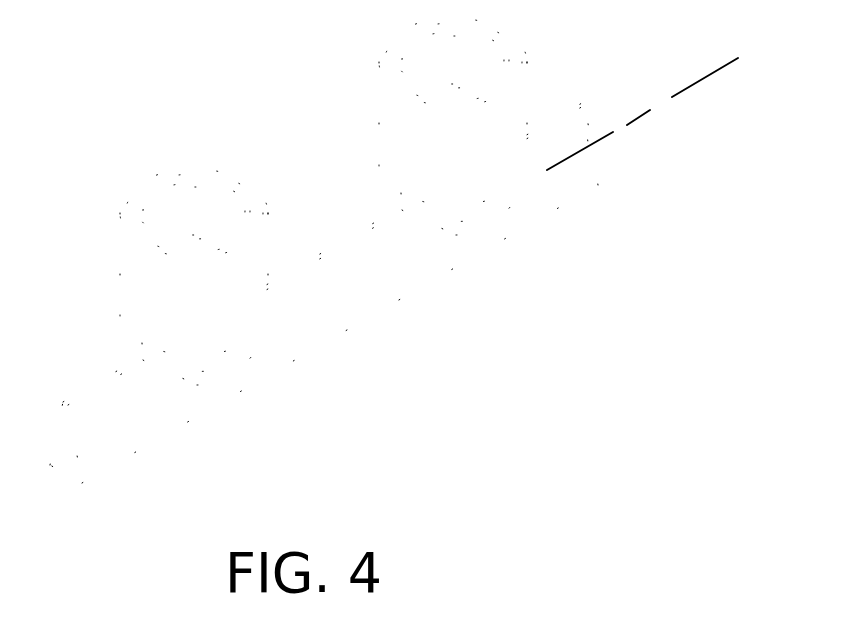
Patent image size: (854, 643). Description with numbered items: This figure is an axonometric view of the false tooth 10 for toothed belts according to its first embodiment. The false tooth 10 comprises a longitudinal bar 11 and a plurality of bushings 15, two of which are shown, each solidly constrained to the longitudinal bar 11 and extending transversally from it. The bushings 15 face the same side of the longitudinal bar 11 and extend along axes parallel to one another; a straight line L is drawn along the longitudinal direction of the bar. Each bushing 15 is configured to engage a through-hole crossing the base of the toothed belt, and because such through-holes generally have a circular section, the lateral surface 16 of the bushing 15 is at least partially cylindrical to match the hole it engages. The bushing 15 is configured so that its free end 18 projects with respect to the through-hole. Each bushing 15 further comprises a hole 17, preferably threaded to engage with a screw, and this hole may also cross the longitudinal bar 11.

The false tooth 10 is at (468, 438).
The longitudinal bar 11 is at (147, 432).
The bushing 15 is at (390, 148).
The lateral surface 16 is at (528, 90).
The hole 17 is at (182, 212).
The free end 18 is at (393, 65).
The straight line L is at (607, 135).